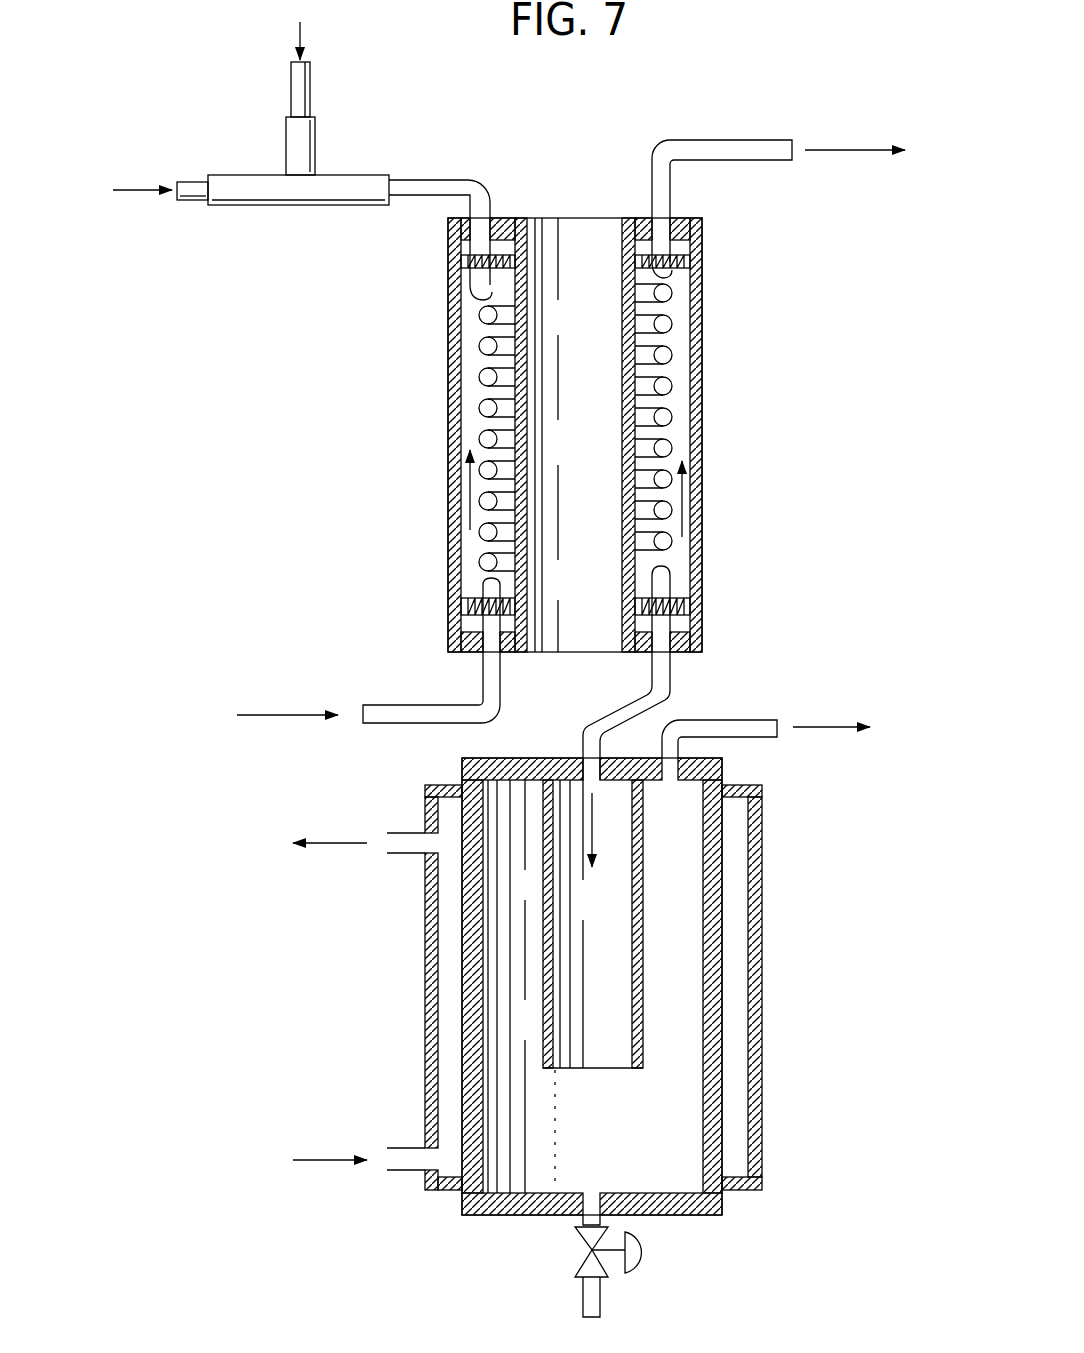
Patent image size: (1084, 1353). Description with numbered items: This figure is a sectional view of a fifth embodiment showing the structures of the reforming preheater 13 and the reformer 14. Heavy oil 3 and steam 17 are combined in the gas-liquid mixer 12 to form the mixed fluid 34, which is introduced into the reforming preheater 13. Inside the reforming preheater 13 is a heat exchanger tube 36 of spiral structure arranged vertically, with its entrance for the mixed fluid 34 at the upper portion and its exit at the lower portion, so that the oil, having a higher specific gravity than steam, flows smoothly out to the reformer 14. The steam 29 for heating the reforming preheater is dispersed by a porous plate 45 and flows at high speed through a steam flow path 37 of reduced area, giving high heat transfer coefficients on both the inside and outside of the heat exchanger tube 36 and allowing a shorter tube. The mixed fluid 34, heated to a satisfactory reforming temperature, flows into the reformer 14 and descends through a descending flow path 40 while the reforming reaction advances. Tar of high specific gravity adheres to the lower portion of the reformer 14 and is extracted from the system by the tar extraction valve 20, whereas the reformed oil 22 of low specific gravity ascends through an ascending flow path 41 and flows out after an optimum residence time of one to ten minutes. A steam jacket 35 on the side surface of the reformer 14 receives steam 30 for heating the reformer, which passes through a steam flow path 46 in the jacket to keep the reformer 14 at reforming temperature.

The heavy oil 3 is at (300, 33).
The gas-liquid mixer 12 is at (305, 183).
The reforming preheater 13 is at (697, 420).
The reformer 14 is at (712, 1128).
The steam 17 is at (133, 190).
The tar extraction valve 20 is at (647, 1252).
The reformed oil 22 is at (823, 725).
The steam for heating reforming preheater 29 is at (265, 714).
The steam for heating reformer 30 is at (325, 1162).
The mixed fluid 34 is at (592, 830).
The steam jacket 35 is at (425, 898).
The heat exchanger tube 36 is at (663, 355).
The steam flow path 37 is at (675, 558).
The descending flow path 40 is at (610, 925).
The ascending flow path 41 is at (672, 1000).
The porous plate 45 is at (675, 272).
The steam flow path 46 is at (447, 1002).